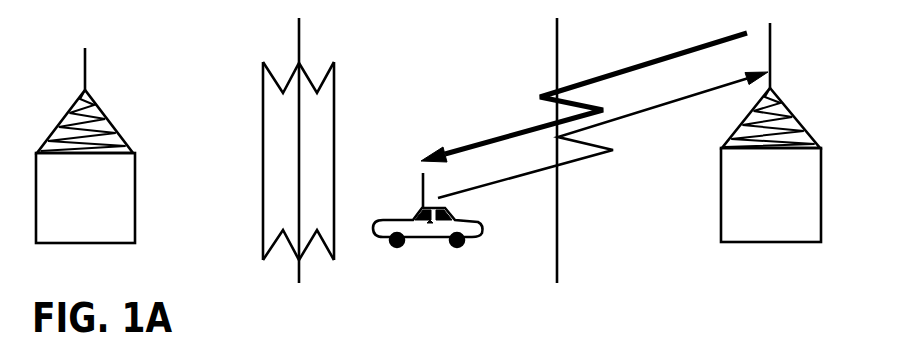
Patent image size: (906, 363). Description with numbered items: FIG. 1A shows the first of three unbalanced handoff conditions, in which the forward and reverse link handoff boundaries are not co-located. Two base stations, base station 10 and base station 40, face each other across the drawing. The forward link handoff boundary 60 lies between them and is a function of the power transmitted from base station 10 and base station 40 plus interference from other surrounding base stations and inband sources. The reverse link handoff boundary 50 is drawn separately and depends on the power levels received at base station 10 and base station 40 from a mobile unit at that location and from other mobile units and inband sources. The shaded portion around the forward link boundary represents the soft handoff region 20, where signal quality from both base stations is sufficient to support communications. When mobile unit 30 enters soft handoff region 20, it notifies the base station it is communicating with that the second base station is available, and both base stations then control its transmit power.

The base station 10 is at (66, 112).
The soft handoff region 20 is at (263, 80).
The mobile unit 30 is at (437, 246).
The base station 40 is at (791, 112).
The reverse link handoff boundary 50 is at (556, 44).
The forward link handoff boundary 60 is at (298, 42).